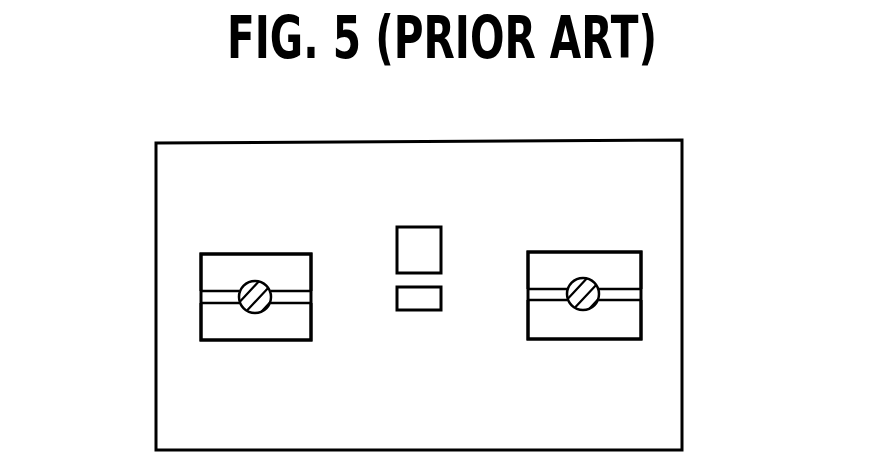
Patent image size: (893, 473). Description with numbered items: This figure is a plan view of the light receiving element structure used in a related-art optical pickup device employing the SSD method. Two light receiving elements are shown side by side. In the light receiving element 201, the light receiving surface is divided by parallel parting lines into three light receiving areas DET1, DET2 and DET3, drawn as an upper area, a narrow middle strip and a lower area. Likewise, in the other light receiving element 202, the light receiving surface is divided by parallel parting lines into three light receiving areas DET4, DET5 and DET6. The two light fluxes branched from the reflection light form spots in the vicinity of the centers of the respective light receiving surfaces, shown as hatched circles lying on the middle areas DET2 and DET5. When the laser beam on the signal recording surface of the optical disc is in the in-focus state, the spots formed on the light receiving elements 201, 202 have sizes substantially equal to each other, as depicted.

The light receiving element 201 is at (255, 252).
The light receiving element 202 is at (582, 250).
The light receiving area DET1 is at (201, 277).
The light receiving area DET2 is at (201, 297).
The light receiving area DET3 is at (201, 321).
The light receiving area DET4 is at (641, 272).
The light receiving area DET5 is at (641, 287).
The light receiving area DET6 is at (641, 315).